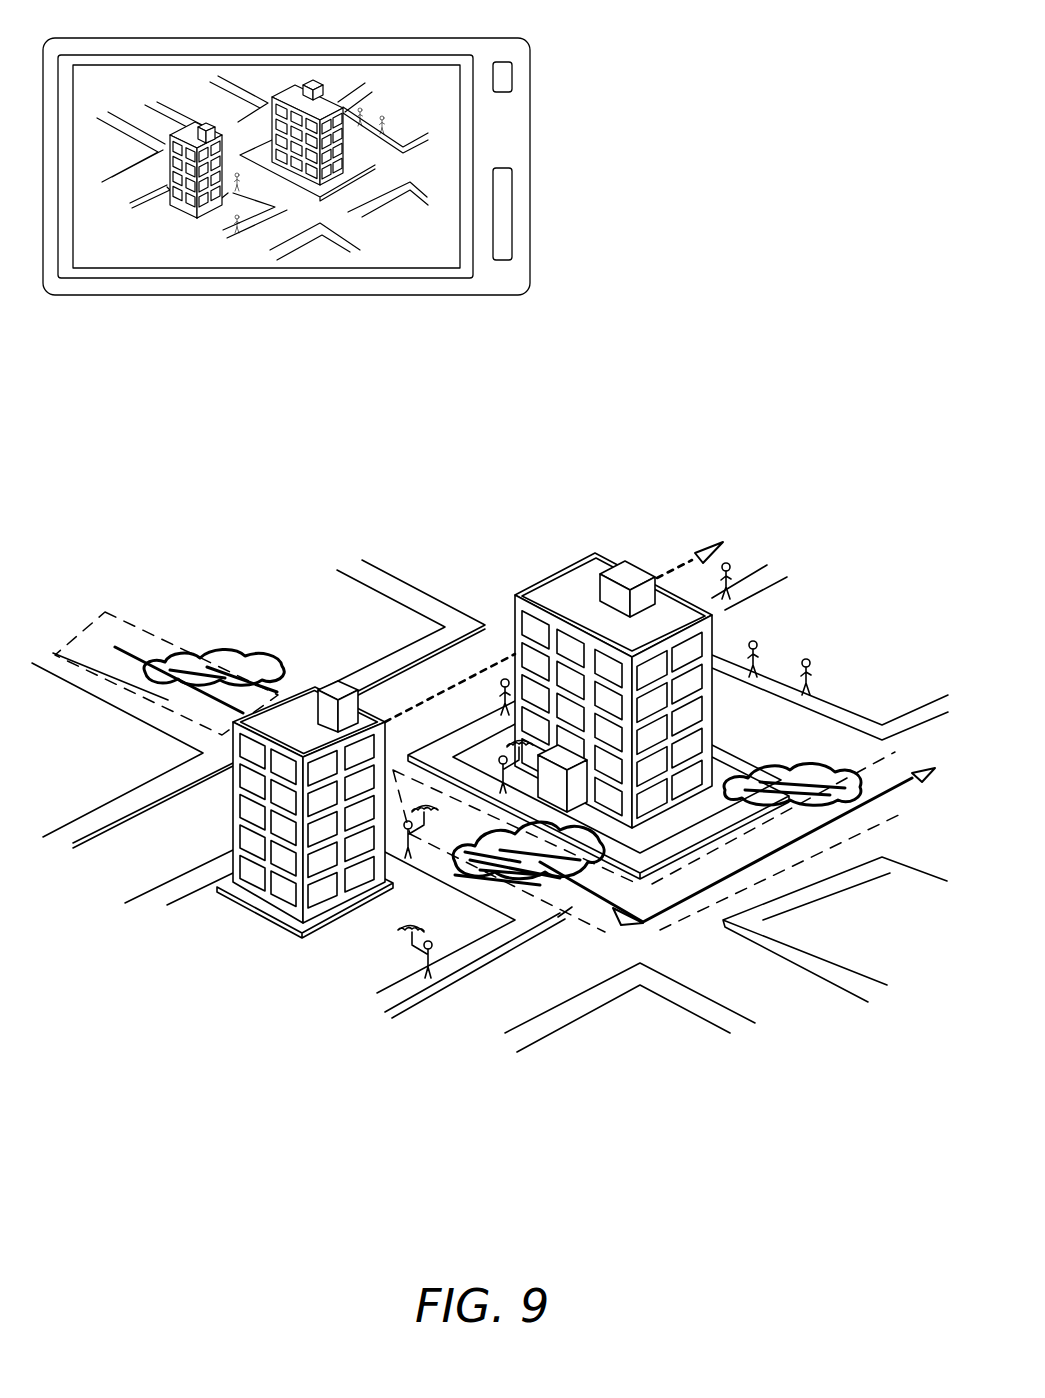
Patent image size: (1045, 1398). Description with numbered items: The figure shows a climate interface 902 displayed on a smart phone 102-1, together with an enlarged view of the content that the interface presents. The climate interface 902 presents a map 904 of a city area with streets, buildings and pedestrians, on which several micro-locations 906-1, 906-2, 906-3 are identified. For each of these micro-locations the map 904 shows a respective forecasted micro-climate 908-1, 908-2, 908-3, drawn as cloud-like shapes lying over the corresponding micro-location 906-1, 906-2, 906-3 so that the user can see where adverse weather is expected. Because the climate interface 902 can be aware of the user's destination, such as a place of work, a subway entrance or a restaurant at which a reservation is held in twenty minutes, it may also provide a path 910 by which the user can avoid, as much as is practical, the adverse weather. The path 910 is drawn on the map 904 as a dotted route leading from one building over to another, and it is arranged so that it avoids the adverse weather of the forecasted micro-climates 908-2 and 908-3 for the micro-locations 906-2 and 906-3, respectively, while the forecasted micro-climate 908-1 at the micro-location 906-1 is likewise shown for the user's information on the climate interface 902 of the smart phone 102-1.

The smart phone 102-1 is at (529, 93).
The climate interface 902 is at (430, 257).
The map 904 is at (800, 470).
The micro-location 906-1 is at (167, 700).
The micro-location 906-2 is at (560, 915).
The micro-location 906-3 is at (800, 873).
The forecasted micro-climate 908-1 is at (236, 638).
The forecasted micro-climate 908-2 is at (454, 878).
The forecasted micro-climate 908-3 is at (822, 752).
The path 910 is at (690, 560).